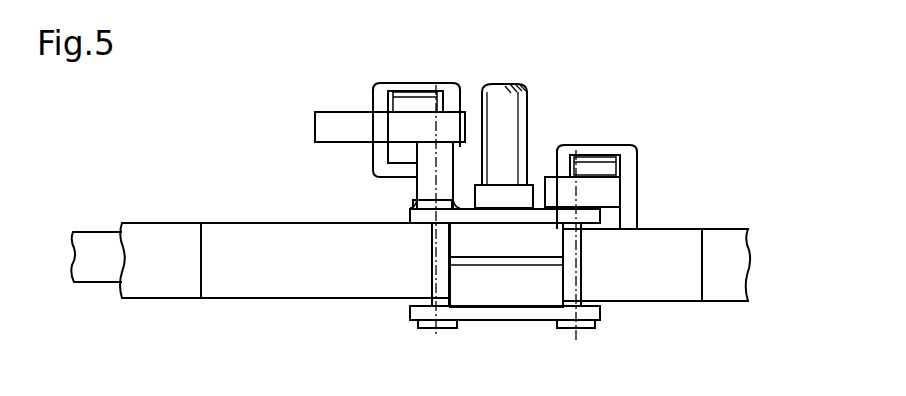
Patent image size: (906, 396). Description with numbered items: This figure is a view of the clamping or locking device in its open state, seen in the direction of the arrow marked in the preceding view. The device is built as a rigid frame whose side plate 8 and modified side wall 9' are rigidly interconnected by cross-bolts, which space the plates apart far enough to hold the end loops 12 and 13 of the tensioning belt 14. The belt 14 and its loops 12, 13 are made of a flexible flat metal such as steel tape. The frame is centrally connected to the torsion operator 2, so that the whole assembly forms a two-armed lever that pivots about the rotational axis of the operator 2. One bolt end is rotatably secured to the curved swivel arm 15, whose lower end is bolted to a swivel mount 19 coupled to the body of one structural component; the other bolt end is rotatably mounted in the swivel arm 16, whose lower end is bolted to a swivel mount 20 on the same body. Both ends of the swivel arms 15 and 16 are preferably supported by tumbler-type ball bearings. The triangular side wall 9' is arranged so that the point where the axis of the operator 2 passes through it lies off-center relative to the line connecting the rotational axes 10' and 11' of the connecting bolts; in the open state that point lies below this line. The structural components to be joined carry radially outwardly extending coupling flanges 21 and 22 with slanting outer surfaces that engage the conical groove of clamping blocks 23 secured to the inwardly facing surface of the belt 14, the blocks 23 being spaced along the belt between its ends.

The torsion operator 2 is at (513, 117).
The side plate 8 is at (532, 313).
The modified side wall 9' is at (505, 156).
The rotational axis of bolt 10 10' is at (409, 223).
The rotational axis of bolt 11 11' is at (604, 256).
The end loop 12 is at (217, 237).
The end loop 13 is at (682, 250).
The tensioning belt 14 is at (151, 247).
The swivel arm 15 is at (327, 127).
The swivel arm 16 is at (608, 193).
The swivel mount 19 is at (403, 100).
The swivel mount 20 is at (607, 167).
The coupling flange 21 is at (465, 233).
The coupling flange 22 is at (478, 293).
The clamping block 23 is at (93, 247).